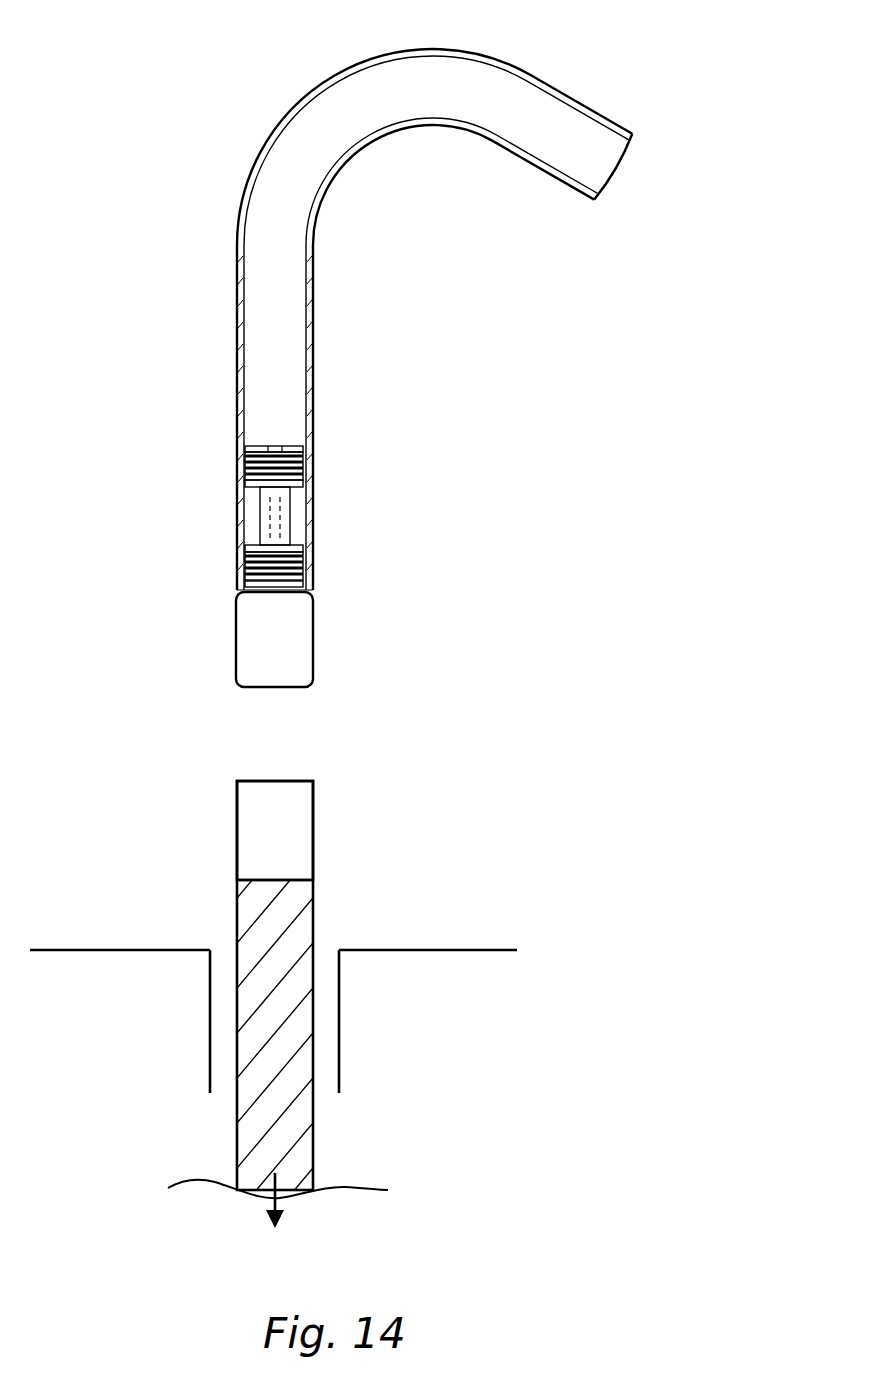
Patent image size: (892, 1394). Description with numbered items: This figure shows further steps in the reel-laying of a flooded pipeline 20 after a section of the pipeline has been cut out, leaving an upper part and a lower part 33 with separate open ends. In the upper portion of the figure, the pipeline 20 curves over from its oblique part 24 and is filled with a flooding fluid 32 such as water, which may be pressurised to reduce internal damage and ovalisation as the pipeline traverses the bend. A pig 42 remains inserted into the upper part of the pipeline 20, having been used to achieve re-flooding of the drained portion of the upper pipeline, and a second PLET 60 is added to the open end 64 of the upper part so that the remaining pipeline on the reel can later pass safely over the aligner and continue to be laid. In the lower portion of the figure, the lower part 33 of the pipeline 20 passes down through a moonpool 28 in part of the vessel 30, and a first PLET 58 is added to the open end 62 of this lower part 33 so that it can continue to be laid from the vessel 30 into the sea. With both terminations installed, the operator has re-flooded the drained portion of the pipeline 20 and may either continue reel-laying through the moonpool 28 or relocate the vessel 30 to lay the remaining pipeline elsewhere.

The pipeline 20 is at (416, 311).
The oblique part 24 is at (568, 112).
The flooding fluid 32 is at (258, 270).
The pig 42 is at (247, 520).
The second PLET 60 is at (236, 623).
The open end 64 is at (340, 594).
The first PLET 58 is at (313, 832).
The open end 62 is at (328, 884).
The lower part 33 is at (237, 928).
The vessel 30 is at (497, 950).
The moonpool 28 is at (339, 1058).